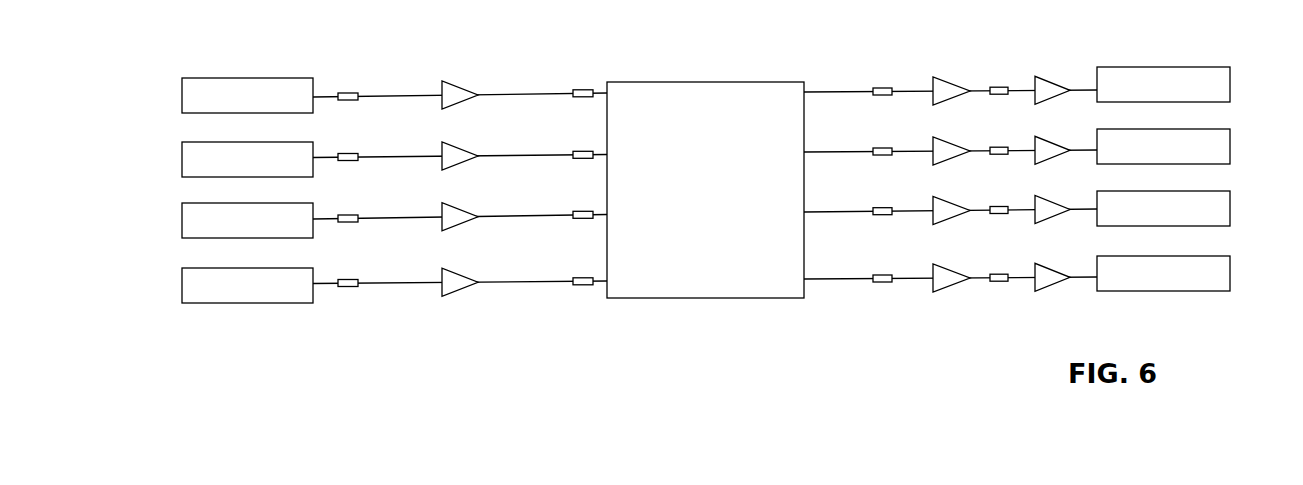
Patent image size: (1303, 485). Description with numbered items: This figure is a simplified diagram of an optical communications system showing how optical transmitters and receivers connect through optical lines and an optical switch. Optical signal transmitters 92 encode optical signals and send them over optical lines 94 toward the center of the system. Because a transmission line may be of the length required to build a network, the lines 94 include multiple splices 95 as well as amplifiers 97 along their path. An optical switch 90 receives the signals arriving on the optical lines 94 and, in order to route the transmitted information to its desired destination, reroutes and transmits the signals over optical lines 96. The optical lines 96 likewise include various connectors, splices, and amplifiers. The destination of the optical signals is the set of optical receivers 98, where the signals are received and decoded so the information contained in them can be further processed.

The optical switch 90 is at (652, 298).
The optical signal transmitters 92 is at (182, 283).
The optical lines 94 is at (545, 282).
The splices 95 is at (370, 72).
The optical lines 96 is at (852, 279).
The amplifiers 97 is at (453, 82).
The optical receivers 98 is at (1230, 272).